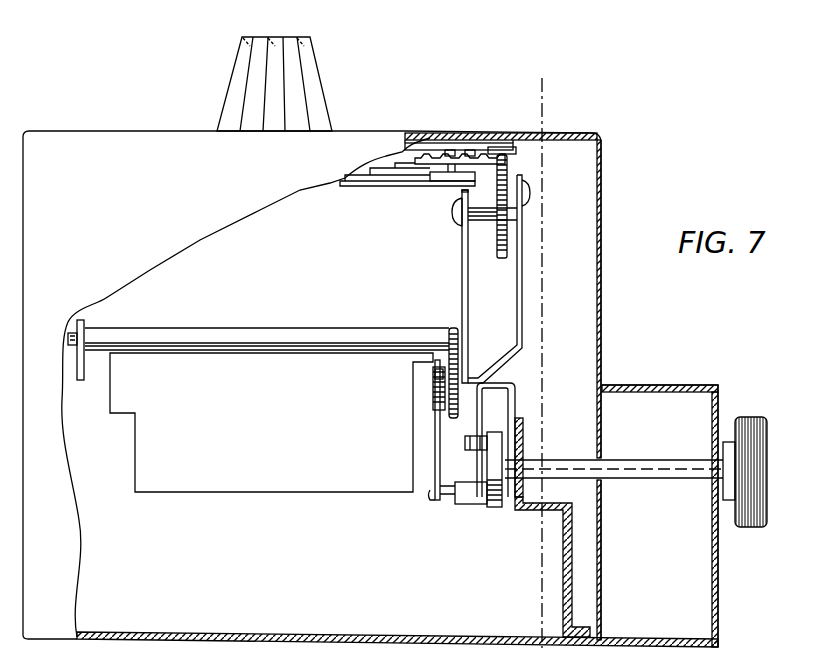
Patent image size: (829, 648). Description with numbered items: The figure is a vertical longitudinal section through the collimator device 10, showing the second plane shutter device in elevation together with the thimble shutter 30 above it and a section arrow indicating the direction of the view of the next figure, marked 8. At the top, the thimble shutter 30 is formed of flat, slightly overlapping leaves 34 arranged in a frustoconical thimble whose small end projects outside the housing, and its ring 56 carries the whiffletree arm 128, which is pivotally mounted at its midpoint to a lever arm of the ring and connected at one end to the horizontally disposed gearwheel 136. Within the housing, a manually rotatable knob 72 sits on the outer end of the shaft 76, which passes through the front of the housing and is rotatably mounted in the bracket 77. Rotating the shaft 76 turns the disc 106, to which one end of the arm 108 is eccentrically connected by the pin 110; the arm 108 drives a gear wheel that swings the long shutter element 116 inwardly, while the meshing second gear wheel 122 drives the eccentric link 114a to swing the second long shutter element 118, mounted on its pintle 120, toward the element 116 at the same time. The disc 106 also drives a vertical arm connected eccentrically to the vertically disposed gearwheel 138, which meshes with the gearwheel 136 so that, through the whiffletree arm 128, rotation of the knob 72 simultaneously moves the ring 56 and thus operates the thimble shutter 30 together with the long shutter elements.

The section line for FIG. 8 is at (512, 94).
The device 10 is at (604, 167).
The thimble shutter 30 is at (340, 93).
The shutter leaves 34 is at (311, 90).
The ring 56 is at (390, 160).
The knob 72 is at (770, 470).
The shaft 76 is at (670, 467).
The bracket 77 is at (575, 575).
The disc 106 is at (495, 507).
The arm 108 is at (432, 478).
The pin 110 is at (463, 500).
The link 114a is at (430, 386).
The long shutter element 116 is at (472, 303).
The second long shutter element 118 is at (289, 421).
The pintle 120 is at (68, 340).
The second gear wheel 122 is at (452, 328).
The whiffletree arm 128 is at (492, 140).
The horizontally disposed gearwheel 136 is at (515, 154).
The vertically disposed gearwheel 138 is at (500, 259).